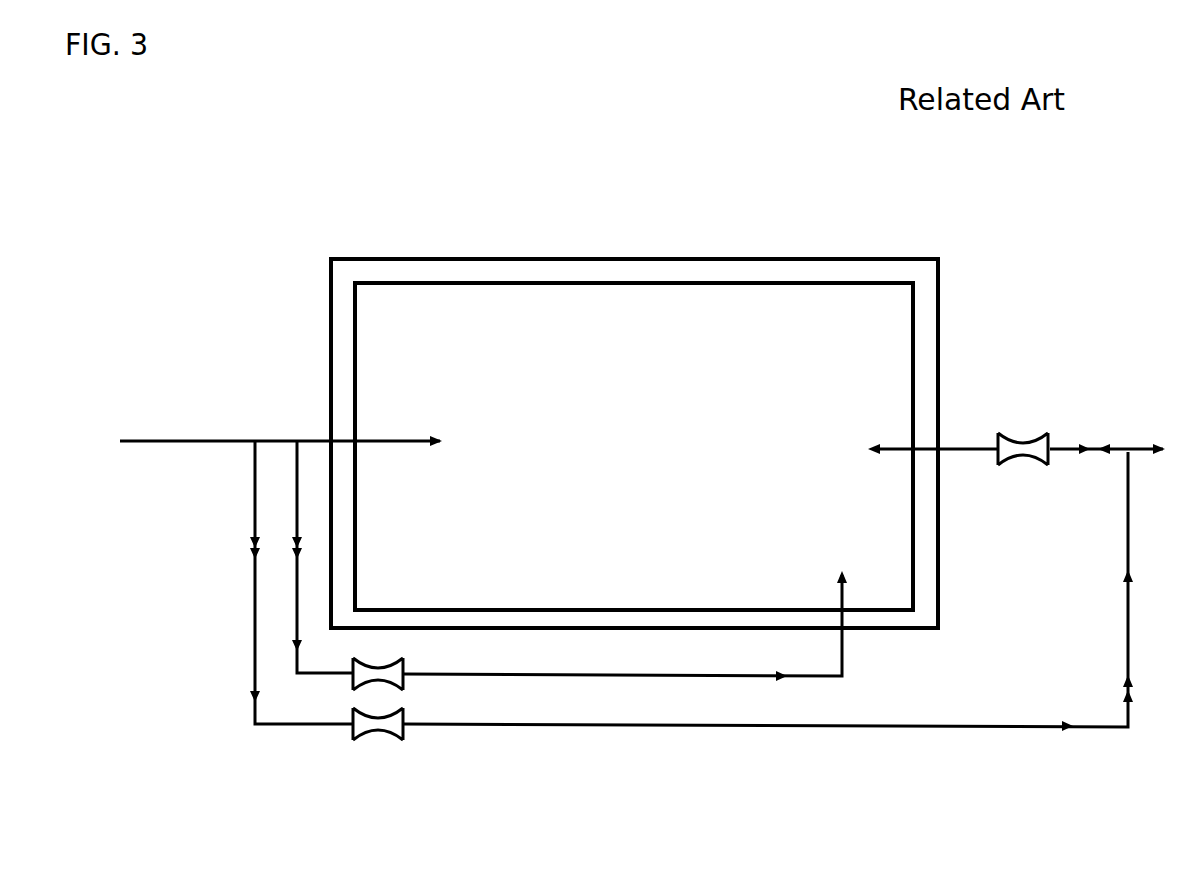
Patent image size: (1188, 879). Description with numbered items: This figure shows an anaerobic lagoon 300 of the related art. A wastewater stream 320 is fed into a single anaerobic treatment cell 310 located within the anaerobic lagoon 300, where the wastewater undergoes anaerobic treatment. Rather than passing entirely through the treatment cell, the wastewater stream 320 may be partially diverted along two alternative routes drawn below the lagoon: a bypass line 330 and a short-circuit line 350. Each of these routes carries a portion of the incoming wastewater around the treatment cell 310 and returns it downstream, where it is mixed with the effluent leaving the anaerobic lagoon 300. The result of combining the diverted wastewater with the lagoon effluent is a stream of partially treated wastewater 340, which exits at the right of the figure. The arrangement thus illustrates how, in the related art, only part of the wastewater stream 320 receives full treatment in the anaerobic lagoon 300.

The anaerobic lagoon 300 is at (741, 253).
The anaerobic treatment cell 310 is at (634, 446).
The wastewater stream 320 is at (281, 421).
The bypass line 330 is at (513, 590).
The partially treated wastewater 340 is at (1021, 433).
The short-circuit line 350 is at (604, 675).